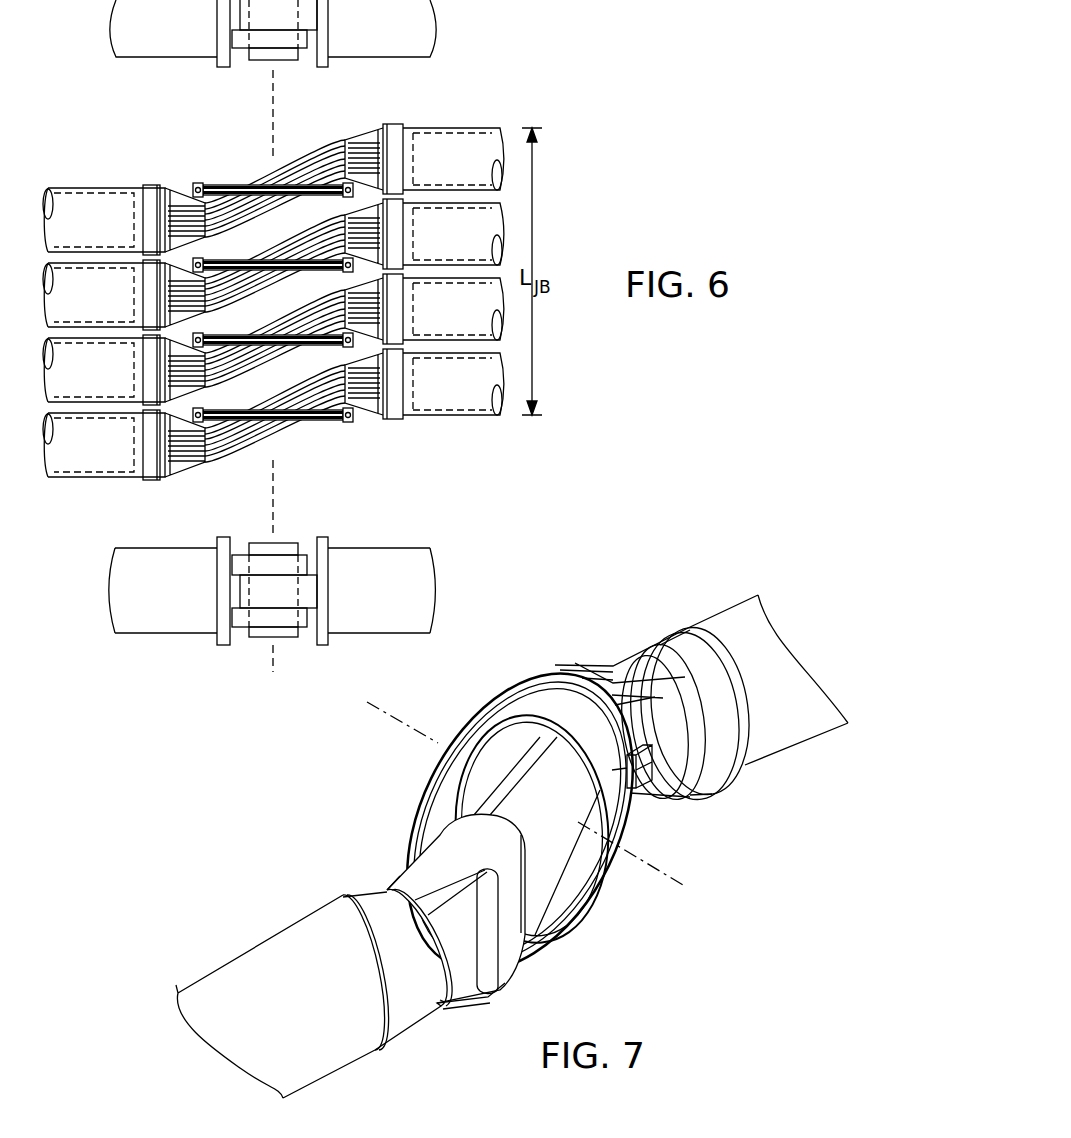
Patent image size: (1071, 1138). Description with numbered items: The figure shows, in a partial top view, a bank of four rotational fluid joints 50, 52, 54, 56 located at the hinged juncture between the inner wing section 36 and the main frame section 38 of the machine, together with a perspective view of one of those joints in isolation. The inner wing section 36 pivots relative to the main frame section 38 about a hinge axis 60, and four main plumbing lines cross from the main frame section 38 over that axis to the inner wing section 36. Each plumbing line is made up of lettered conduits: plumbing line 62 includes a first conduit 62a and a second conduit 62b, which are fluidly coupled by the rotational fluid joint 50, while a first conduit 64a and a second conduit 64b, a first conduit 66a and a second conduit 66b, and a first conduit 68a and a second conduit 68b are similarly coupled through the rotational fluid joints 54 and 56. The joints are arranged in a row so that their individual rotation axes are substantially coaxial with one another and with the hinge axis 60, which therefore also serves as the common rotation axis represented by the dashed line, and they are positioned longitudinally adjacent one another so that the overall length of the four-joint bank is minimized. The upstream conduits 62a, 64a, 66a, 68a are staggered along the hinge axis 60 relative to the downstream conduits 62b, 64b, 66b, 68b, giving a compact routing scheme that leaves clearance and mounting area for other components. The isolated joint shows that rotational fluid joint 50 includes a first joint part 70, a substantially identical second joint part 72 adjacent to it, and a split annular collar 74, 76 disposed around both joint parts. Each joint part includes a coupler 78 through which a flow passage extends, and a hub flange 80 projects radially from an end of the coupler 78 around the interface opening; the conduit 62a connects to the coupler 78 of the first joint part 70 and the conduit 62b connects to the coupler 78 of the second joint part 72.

In FIG. 6, the inner wing section 36 is at (178, 100).
In FIG. 6, the main frame section 38 is at (391, 96).
In FIG. 6, the rotational fluid joint 50 is at (262, 186).
In FIG. 7, the rotational fluid joint 50 is at (384, 806).
In FIG. 6, the rotational fluid joint 52 is at (268, 256).
In FIG. 6, the rotational fluid joint 54 is at (268, 331).
In FIG. 6, the rotational fluid joint 56 is at (268, 406).
In FIG. 6, the hinge axis 60 is at (272, 652).
In FIG. 7, the hinge axis 60 is at (400, 722).
In FIG. 6, the main plumbing line 62 is at (378, 548).
In FIG. 7, the main plumbing line 62 is at (731, 626).
In FIG. 6, the first conduit 62a is at (474, 172).
In FIG. 7, the first conduit 62a is at (805, 700).
In FIG. 6, the second conduit 62b is at (112, 232).
In FIG. 7, the second conduit 62b is at (322, 1014).
In FIG. 6, the first conduit 64a is at (474, 246).
In FIG. 6, the second conduit 64b is at (112, 306).
In FIG. 6, the first conduit 66a is at (474, 322).
In FIG. 6, the second conduit 66b is at (112, 382).
In FIG. 6, the first conduit 68a is at (474, 396).
In FIG. 6, the second conduit 68b is at (112, 456).
In FIG. 7, the first joint part 70 is at (570, 665).
In FIG. 7, the second joint part 72 is at (460, 1008).
In FIG. 7, the split annular collar 74 is at (495, 712).
In FIG. 7, the split annular collar 76 is at (580, 893).
In FIG. 7, the coupler 78 is at (592, 662).
In FIG. 7, the hub flange 80 is at (600, 792).